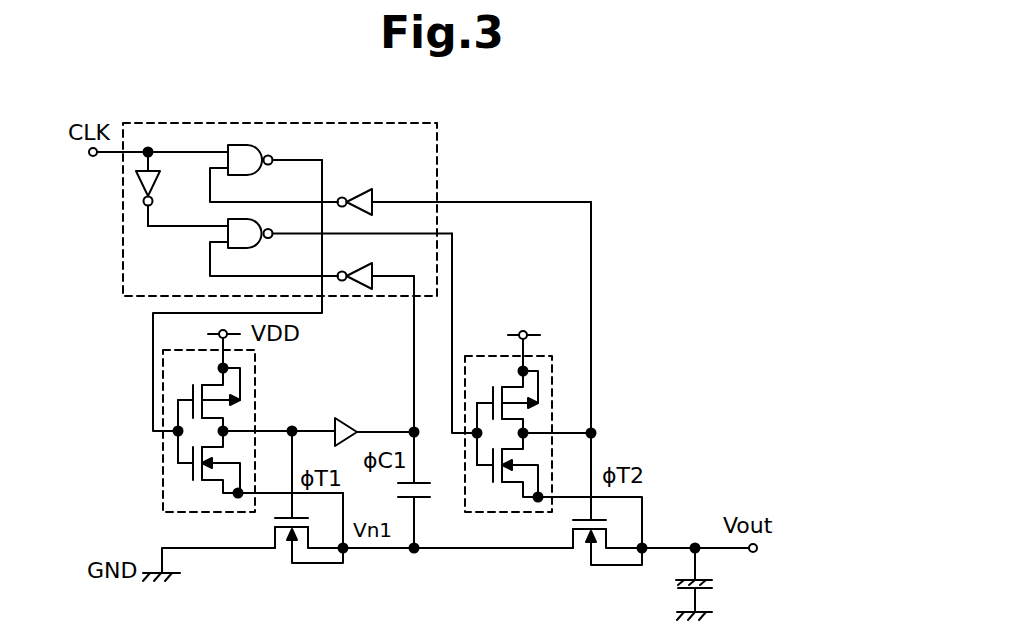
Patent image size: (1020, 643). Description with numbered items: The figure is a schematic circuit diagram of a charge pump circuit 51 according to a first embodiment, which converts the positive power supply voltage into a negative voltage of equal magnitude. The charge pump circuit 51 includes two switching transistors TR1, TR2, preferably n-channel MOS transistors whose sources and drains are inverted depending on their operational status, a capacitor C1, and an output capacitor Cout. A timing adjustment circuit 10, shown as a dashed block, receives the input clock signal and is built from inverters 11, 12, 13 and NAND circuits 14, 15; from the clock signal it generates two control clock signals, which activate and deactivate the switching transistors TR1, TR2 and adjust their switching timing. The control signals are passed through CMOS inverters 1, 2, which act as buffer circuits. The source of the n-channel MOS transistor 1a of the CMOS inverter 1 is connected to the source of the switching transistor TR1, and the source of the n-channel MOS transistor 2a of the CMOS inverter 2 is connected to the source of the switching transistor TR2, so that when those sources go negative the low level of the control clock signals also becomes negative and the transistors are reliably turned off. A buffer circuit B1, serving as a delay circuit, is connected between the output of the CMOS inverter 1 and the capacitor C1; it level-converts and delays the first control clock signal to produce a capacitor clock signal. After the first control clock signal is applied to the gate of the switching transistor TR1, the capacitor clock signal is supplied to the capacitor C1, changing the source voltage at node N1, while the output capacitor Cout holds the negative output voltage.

The charge pump circuit 51 is at (614, 151).
The timing adjustment circuit 10 is at (437, 147).
The inverter 11 is at (372, 192).
The inverter 12 is at (160, 182).
The inverter 13 is at (372, 266).
The NAND circuit 14 is at (263, 143).
The NAND circuit 15 is at (250, 252).
The CMOS inverter 1 is at (256, 370).
The n-channel MOS transistor 1a is at (193, 470).
The CMOS inverter 2 is at (553, 378).
The n-channel MOS transistor 2a is at (488, 474).
The switching transistor TR1 is at (273, 516).
The switching transistor TR2 is at (573, 513).
The buffer circuit B1 is at (354, 418).
The capacitor C1 is at (420, 481).
The node N1 is at (417, 556).
The output capacitor Cout is at (710, 574).